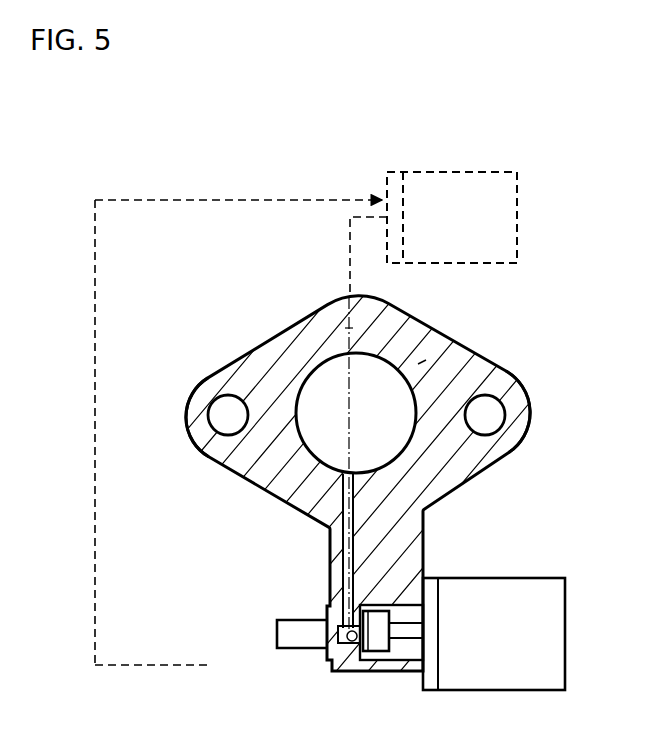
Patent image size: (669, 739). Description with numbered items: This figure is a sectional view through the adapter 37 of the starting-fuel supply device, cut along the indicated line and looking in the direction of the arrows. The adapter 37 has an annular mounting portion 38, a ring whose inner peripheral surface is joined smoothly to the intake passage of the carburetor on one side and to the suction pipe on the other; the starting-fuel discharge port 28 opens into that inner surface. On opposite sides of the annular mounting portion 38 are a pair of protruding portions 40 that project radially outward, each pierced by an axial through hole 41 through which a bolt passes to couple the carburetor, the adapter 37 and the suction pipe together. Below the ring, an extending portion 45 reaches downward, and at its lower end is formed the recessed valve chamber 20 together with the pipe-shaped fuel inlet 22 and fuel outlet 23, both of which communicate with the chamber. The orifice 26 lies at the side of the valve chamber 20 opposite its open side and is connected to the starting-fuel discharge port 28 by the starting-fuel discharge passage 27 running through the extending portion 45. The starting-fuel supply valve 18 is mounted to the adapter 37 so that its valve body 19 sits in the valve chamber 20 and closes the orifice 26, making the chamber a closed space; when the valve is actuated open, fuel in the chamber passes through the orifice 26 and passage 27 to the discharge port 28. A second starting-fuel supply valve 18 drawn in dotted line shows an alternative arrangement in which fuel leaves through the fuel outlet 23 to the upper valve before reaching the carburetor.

The starting-fuel supply valve 18 is at (514, 574).
The valve body 19 is at (382, 650).
The valve chamber 20 is at (400, 648).
The fuel inlet 22 is at (277, 634).
The fuel outlet 23 is at (192, 667).
The orifice 26 is at (352, 645).
The starting-fuel discharge passage 27 is at (331, 320).
The starting-fuel discharge port 28 is at (352, 473).
The adapter 37 is at (436, 313).
The annular mounting portion 38 is at (422, 362).
The protruding portion 40 is at (194, 418).
The through hole 41 is at (220, 402).
The extending portion 45 is at (382, 553).